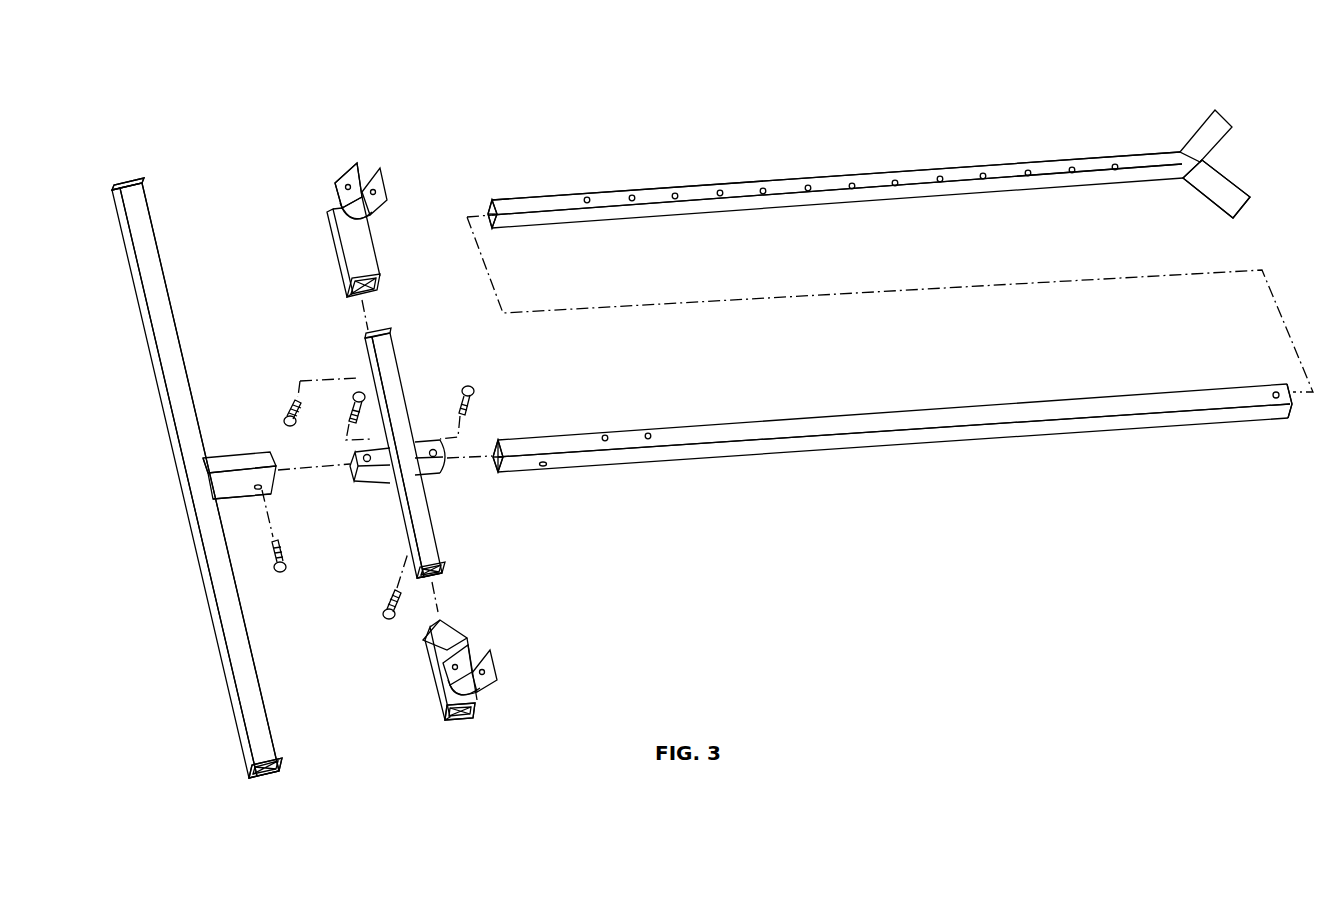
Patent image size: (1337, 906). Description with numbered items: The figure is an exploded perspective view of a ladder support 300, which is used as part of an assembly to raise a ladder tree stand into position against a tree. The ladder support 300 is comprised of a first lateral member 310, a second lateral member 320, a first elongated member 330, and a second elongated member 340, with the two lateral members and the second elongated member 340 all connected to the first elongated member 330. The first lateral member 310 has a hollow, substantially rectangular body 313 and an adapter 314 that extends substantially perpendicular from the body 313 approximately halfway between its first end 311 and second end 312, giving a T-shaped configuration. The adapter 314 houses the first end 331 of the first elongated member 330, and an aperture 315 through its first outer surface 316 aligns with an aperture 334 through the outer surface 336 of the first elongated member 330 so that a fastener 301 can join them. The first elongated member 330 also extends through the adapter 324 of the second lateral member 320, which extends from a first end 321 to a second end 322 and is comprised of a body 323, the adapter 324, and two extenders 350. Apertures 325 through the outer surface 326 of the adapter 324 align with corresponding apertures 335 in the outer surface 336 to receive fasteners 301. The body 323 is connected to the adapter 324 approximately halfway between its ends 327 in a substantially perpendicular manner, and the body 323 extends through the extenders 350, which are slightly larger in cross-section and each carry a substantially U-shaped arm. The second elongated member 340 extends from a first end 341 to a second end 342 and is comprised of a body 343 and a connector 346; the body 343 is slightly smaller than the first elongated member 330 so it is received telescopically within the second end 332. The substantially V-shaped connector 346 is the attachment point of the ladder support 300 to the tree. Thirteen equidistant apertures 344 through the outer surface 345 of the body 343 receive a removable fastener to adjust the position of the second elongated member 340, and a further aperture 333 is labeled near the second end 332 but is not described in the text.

The ladder support 300 is at (566, 80).
The fastener 301 is at (350, 415).
The first lateral member 310 is at (153, 240).
The first end 311 is at (270, 775).
The second end 312 is at (128, 178).
The body 313 is at (178, 390).
The adapter 314 is at (243, 468).
The aperture 315 is at (278, 490).
The first outer surface 316 is at (228, 498).
The second lateral member 320 is at (412, 452).
The first end 321 is at (472, 715).
The second end 322 is at (333, 213).
The body 323 is at (395, 372).
The adapter 324 is at (380, 490).
The apertures 325 is at (367, 462).
The outer surface 326 is at (440, 451).
The ends 327 is at (352, 470).
The first elongated member 330 is at (915, 465).
The first end 331 is at (497, 465).
The second end 332 is at (1292, 410).
The hole 333 is at (1275, 390).
The aperture 334 is at (546, 467).
The apertures 335 is at (606, 434).
The outer surface 336 is at (638, 455).
The second elongated member 340 is at (800, 163).
The first end 341 is at (490, 210).
The second end 342 is at (1230, 128).
The body 343 is at (968, 168).
The apertures 344 is at (589, 197).
The outer surface 345 is at (556, 200).
The connector 346 is at (1210, 175).
The extenders 350 is at (365, 245).